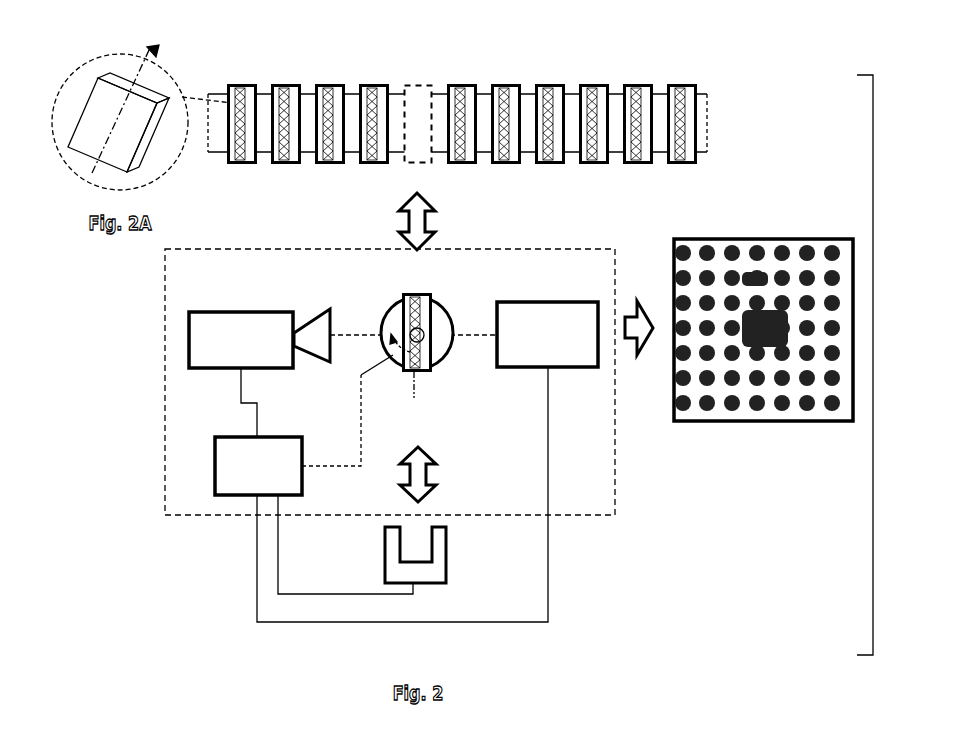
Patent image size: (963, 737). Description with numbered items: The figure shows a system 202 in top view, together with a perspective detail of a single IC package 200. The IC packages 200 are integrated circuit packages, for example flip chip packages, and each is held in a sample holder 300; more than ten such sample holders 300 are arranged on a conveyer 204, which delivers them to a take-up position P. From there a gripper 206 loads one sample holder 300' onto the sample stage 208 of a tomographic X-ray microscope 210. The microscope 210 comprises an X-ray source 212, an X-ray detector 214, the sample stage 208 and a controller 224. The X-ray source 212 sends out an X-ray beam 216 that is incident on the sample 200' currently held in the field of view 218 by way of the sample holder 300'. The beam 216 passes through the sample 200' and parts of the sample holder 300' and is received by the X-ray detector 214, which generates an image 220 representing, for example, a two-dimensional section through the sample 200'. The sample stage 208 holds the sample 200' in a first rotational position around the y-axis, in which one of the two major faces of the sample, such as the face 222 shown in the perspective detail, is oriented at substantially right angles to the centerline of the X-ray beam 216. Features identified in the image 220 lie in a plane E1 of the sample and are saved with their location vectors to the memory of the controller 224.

In FIG. 2A, the IC package 200 is at (109, 100).
In FIG. 2, the IC package 200 is at (581, 145).
In FIG. 2, the sample holder 300 is at (556, 94).
In FIG. 2, the take-up position P is at (404, 85).
In FIG. 2, the conveyer 204 is at (708, 117).
In FIG. 2, the system 202 is at (873, 367).
In FIG. 2, the tomographic X-ray microscope 210 is at (164, 424).
In FIG. 2, the X-ray source 212 is at (250, 312).
In FIG. 2, the X-ray beam 216 is at (352, 334).
In FIG. 2, the field of view 218 is at (331, 355).
In FIG. 2, the sample stage 208 is at (448, 365).
In FIG. 2, the sample 200' is at (408, 312).
In FIG. 2, the sample holder 300' is at (451, 314).
In FIG. 2, the X-ray detector 214 is at (535, 302).
In FIG. 2, the controller 224 is at (215, 462).
In FIG. 2, the gripper 206 is at (446, 548).
In FIG. 2, the image 220 is at (736, 421).
In FIG. 2A, the major face 222 is at (100, 135).
In FIG. 2A, the y-axis y is at (140, 72).
In FIG. 2, the y-axis y is at (420, 378).
In FIG. 2, the plane E1 is at (405, 392).